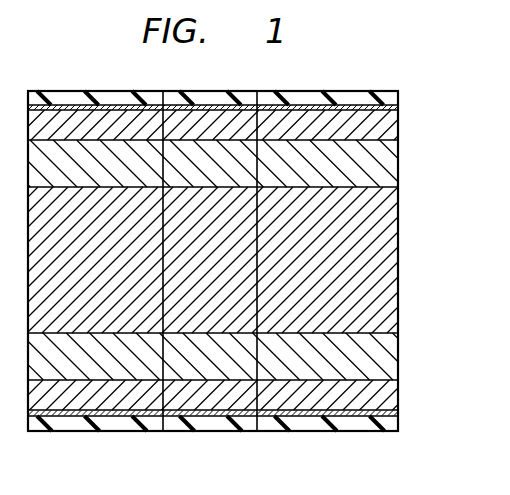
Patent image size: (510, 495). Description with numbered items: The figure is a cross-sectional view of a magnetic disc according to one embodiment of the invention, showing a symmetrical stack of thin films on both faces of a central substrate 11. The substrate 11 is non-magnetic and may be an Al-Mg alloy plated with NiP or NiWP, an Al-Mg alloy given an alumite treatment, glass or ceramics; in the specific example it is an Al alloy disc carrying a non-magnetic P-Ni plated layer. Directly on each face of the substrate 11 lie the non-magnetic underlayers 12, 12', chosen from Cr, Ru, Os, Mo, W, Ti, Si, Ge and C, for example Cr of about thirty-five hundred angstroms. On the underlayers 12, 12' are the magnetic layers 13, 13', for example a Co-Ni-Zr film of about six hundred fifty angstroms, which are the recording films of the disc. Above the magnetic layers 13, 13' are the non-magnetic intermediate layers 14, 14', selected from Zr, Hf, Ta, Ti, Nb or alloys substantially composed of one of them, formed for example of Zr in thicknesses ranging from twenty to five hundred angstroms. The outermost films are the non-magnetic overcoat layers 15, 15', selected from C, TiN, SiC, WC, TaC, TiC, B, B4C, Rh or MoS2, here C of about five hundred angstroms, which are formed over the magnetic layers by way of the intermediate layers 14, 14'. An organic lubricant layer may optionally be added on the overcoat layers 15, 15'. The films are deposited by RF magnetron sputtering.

The substrate 11 is at (388, 232).
The underlayer 12 is at (237, 163).
The magnetic layer 13 is at (232, 131).
The non-magnetic intermediate layer 14 is at (239, 115).
The non-magnetic overcoat layer 15 is at (234, 93).
The underlayer 12' is at (236, 356).
The magnetic layer 13' is at (236, 395).
The non-magnetic intermediate layer 14' is at (241, 414).
The non-magnetic overcoat layer 15' is at (237, 434).